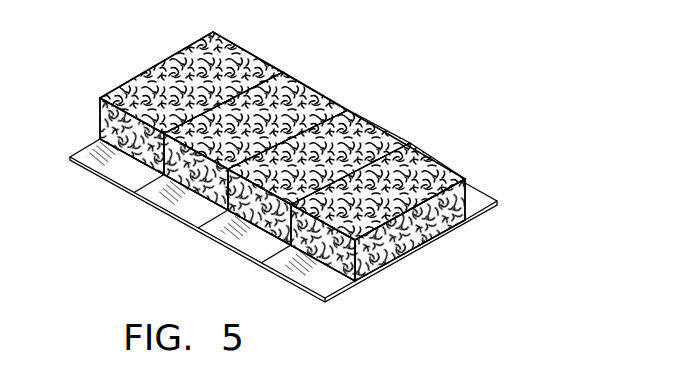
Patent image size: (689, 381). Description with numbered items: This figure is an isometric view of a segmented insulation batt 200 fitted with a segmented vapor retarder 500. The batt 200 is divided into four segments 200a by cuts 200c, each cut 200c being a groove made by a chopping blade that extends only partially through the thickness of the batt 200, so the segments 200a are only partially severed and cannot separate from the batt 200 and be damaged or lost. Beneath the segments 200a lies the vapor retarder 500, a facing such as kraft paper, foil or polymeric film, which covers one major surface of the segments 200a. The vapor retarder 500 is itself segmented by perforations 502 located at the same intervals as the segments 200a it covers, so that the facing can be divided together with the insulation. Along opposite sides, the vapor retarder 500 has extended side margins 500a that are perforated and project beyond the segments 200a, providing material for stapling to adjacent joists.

The batt 200 is at (304, 141).
The segments 200a is at (232, 44).
The cut 200c is at (283, 72).
The vapor retarder 500 is at (433, 248).
The extended side margins 500a is at (485, 197).
The perforations 502 is at (143, 179).